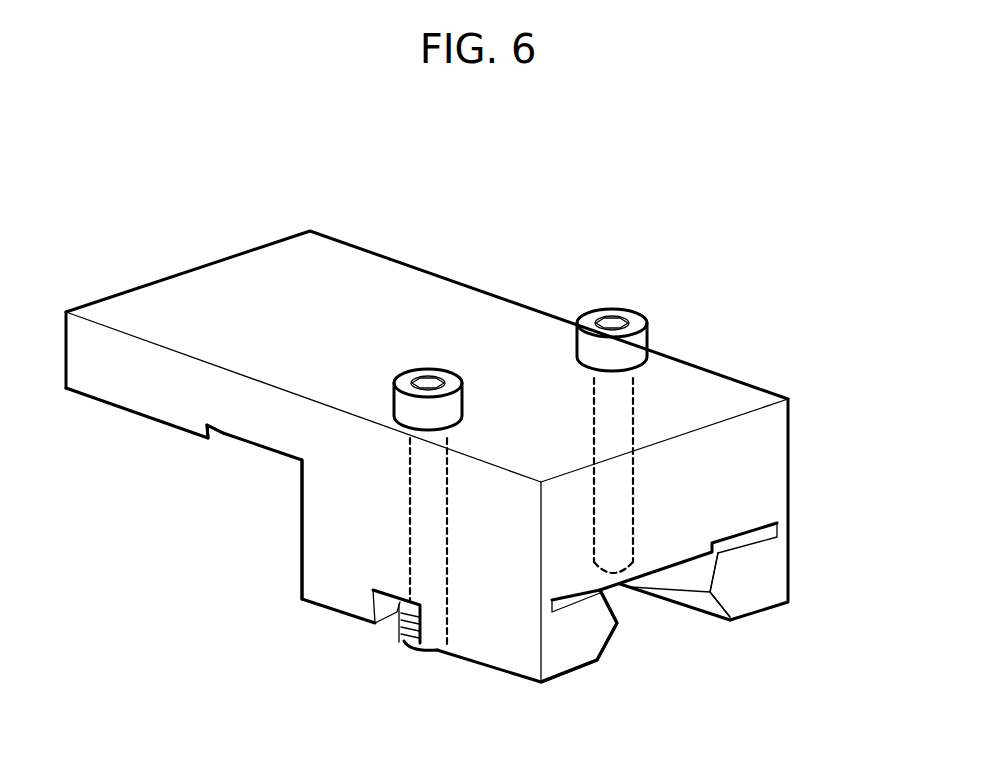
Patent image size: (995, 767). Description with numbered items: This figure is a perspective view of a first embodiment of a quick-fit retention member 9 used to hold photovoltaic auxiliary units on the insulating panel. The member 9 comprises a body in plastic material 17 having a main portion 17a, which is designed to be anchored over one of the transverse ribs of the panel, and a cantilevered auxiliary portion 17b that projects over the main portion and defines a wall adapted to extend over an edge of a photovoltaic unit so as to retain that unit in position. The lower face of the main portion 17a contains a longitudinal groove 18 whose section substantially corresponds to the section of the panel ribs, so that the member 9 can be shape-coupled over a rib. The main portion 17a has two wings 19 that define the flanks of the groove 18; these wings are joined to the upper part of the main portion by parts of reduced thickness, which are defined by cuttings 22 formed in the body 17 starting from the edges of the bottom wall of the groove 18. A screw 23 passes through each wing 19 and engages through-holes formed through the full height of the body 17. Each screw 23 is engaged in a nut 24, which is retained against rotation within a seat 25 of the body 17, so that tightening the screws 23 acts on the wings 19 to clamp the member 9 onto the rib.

The quick-fit retention member 9 is at (470, 278).
The body in plastic material 17 is at (733, 370).
The main portion 17a is at (298, 518).
The cantilevered auxiliary portion 17b is at (141, 418).
The longitudinal groove 18 is at (687, 614).
The wings 19 is at (600, 633).
The cuttings 22 is at (573, 600).
The screw 23 is at (395, 388).
The nut 24 is at (400, 622).
The seat 25 is at (381, 624).